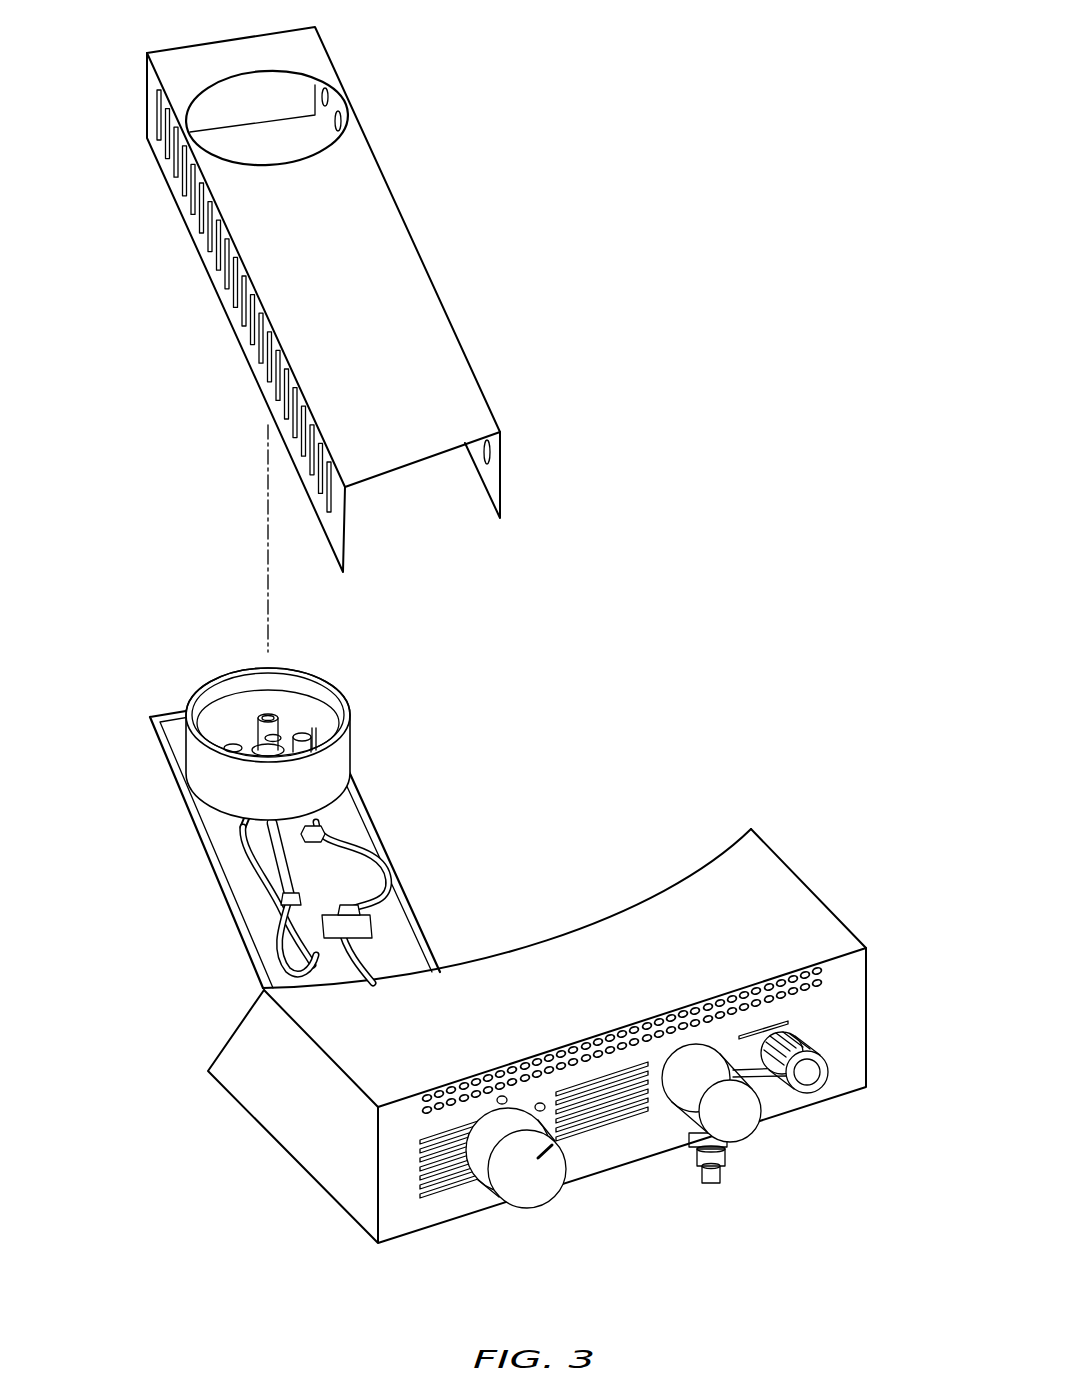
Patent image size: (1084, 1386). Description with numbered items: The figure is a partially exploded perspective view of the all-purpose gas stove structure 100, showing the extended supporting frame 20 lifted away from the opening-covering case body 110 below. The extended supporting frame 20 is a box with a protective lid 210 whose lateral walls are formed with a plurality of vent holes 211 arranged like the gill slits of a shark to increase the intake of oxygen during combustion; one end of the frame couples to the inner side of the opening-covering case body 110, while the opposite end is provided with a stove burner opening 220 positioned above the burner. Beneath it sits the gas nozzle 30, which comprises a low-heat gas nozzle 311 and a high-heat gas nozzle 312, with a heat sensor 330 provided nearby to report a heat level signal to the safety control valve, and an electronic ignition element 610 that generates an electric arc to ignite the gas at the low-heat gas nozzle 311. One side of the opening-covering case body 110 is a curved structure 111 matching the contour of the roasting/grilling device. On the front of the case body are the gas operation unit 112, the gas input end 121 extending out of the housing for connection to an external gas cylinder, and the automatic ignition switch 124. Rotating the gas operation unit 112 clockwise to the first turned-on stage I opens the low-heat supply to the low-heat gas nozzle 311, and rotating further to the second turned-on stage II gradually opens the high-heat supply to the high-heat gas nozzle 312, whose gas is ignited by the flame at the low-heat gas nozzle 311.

The all-purpose gas stove structure 100 is at (890, 24).
The extended supporting frame 20 is at (303, 299).
The protective lid 210 is at (200, 312).
The vent holes 211 is at (193, 187).
The stove burner opening 220 is at (304, 86).
The gas nozzle 30 is at (272, 814).
The low-heat gas nozzle 311 is at (303, 733).
The high-heat gas nozzle 312 is at (256, 714).
The heat sensor 330 is at (318, 736).
The electronic ignition element 610 is at (232, 750).
The opening-covering case body 110 is at (554, 985).
The curved structure 111 is at (677, 884).
The gas operation unit 112 is at (547, 1212).
The gas input end 121 is at (723, 1150).
The automatic ignition switch 124 is at (816, 1079).
The first turned-on stage / low-heat control section I is at (500, 1102).
The second turned-on stage / high-heat control section II is at (536, 1109).